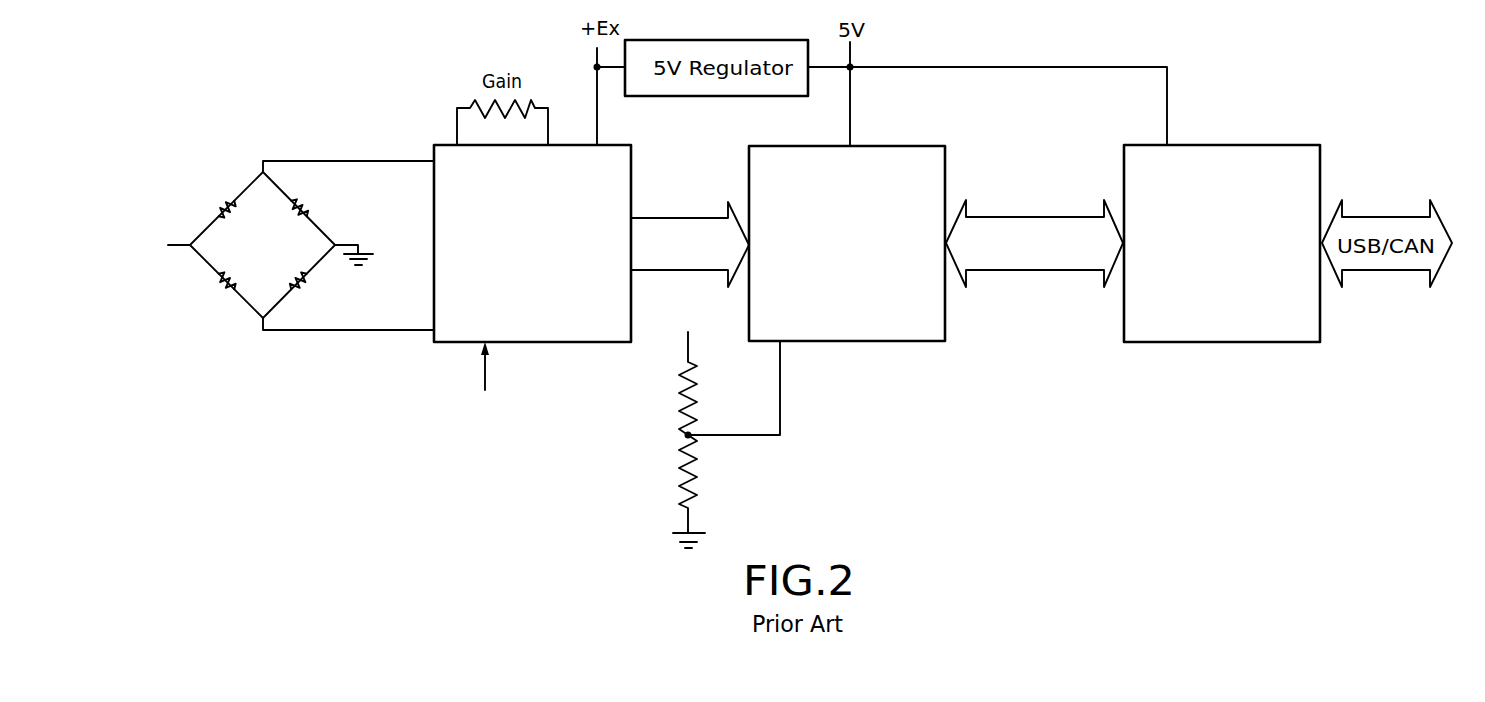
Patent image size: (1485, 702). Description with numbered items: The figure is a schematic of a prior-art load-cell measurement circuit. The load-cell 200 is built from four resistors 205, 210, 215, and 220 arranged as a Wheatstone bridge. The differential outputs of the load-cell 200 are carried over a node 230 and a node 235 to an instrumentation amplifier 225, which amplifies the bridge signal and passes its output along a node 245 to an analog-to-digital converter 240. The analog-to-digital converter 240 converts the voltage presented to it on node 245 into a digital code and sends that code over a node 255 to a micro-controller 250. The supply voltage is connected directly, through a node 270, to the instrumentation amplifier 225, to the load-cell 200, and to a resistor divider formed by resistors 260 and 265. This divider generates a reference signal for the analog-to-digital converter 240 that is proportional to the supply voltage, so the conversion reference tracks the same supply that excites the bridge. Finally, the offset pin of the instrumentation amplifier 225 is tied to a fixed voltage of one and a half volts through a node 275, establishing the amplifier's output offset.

The load-cell 200 is at (189, 382).
The resistor 205 is at (230, 207).
The resistor 210 is at (297, 207).
The resistor 215 is at (296, 283).
The resistor 220 is at (231, 288).
The instrumentation amplifier 225 is at (552, 303).
The node 230 is at (312, 161).
The node 235 is at (347, 330).
The analog-to-digital converter 240 is at (870, 302).
The node 245 is at (678, 218).
The micro-controller 250 is at (1244, 302).
The node 255 is at (1037, 218).
The resistor 260 is at (680, 405).
The resistor 265 is at (680, 485).
The node 270 is at (595, 57).
The node 275 is at (485, 383).